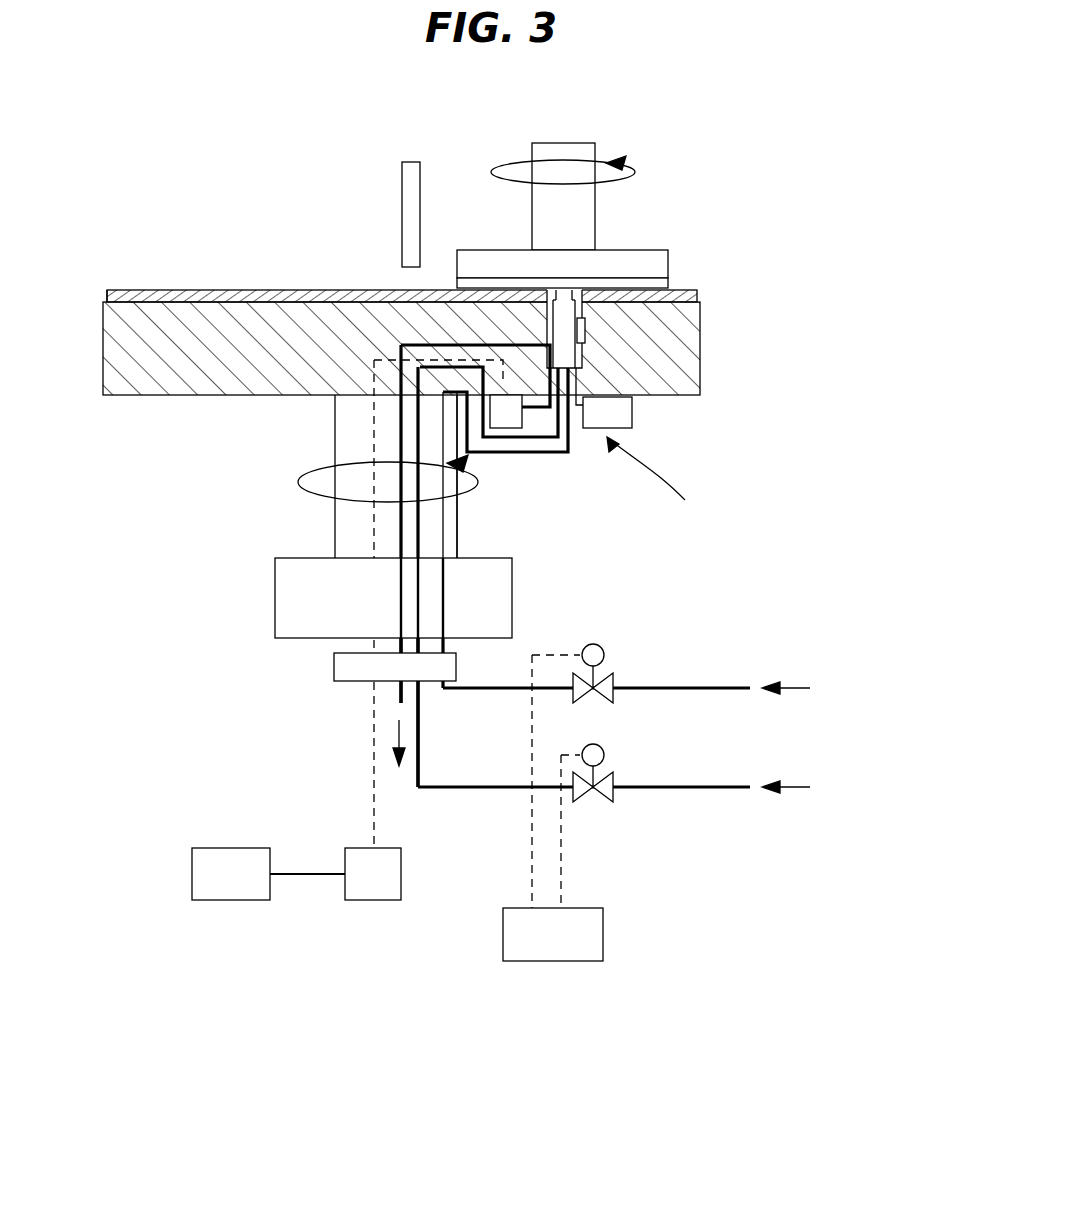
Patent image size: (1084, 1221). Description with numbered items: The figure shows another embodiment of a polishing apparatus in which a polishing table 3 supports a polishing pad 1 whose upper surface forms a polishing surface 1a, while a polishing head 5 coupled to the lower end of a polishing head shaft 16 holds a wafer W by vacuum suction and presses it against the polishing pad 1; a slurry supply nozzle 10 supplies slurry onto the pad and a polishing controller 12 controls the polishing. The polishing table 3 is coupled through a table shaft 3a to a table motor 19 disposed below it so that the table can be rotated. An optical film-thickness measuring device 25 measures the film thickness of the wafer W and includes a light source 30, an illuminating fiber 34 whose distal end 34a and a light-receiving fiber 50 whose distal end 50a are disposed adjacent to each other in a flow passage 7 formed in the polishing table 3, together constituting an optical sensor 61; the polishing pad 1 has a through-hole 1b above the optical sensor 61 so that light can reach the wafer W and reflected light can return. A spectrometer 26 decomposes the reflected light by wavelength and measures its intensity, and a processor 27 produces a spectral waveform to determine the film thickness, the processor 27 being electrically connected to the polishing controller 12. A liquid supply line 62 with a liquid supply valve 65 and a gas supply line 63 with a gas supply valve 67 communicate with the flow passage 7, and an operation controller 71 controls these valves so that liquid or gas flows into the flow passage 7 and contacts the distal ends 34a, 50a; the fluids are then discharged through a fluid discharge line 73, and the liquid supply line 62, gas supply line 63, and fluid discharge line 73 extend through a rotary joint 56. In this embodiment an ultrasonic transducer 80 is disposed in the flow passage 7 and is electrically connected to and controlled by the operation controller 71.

The polishing pad 1 is at (226, 296).
The polishing surface 1a is at (163, 291).
The through-hole 1b is at (558, 298).
The polishing table 3 is at (168, 398).
The table shaft 3a is at (334, 508).
The polishing head 5 is at (661, 250).
The flow passage 7 is at (585, 352).
The slurry supply nozzle 10 is at (402, 200).
The polishing controller 12 is at (192, 866).
The polishing head shaft 16 is at (532, 154).
The table motor 19 is at (275, 614).
The optical film-thickness measuring device 25 is at (655, 482).
The spectrometer 26 is at (505, 428).
The processor 27 is at (356, 848).
The light source 30 is at (632, 413).
The illuminating fiber 34 is at (585, 318).
The distal end of illuminating fiber 34a is at (574, 300).
The light-receiving fiber 50 is at (546, 327).
The distal end of light-receiving fiber 50a is at (552, 300).
The rotary joint 56 is at (334, 670).
The optical sensor 61 is at (567, 300).
The liquid supply line 62 is at (677, 688).
The gas supply line 63 is at (677, 787).
The liquid supply valve 65 is at (603, 672).
The gas supply valve 67 is at (603, 771).
The operation controller 71 is at (553, 961).
The fluid discharge line 73 is at (400, 428).
The ultrasonic transducer 80 is at (585, 335).
The wafer W is at (670, 285).